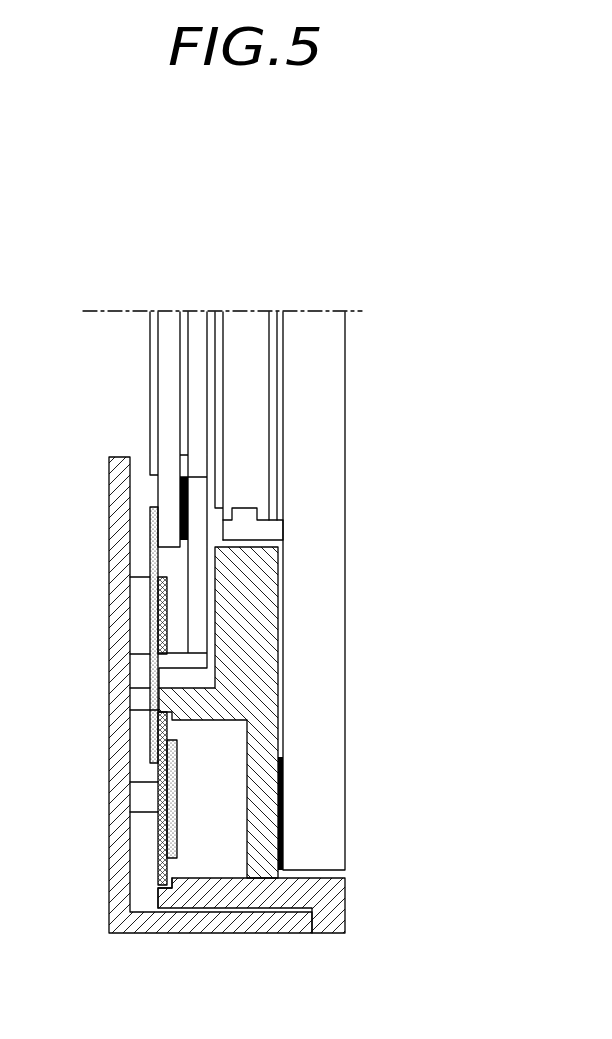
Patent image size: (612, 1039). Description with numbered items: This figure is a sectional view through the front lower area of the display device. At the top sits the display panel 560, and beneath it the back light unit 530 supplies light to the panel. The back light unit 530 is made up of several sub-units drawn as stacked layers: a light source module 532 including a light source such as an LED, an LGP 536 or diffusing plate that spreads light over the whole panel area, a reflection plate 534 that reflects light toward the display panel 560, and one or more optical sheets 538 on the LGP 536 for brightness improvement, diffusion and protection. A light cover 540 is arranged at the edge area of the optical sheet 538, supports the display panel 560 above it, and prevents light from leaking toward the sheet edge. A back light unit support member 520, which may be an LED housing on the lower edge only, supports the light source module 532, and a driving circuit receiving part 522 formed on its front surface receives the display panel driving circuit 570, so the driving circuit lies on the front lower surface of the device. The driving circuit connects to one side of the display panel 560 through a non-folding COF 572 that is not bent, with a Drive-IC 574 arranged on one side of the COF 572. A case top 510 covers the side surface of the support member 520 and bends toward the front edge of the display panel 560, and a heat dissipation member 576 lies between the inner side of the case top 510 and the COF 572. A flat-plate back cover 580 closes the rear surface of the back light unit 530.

The case top 510 is at (145, 930).
The back light unit support member 520 is at (335, 905).
The driving circuit receiving part 522 is at (178, 884).
The back light unit 530 is at (267, 213).
The light source module 532 is at (257, 507).
The reflection plate 534 is at (273, 323).
The LGP 536 is at (247, 320).
The optical sheet 538 is at (221, 316).
The light cover 540 is at (200, 573).
The display panel 560 is at (169, 320).
The display panel driving circuit 570 is at (155, 823).
The COF 572 is at (153, 710).
The Drive-IC 574 is at (158, 622).
The heat dissipation member 576 is at (142, 610).
The back cover 580 is at (333, 595).